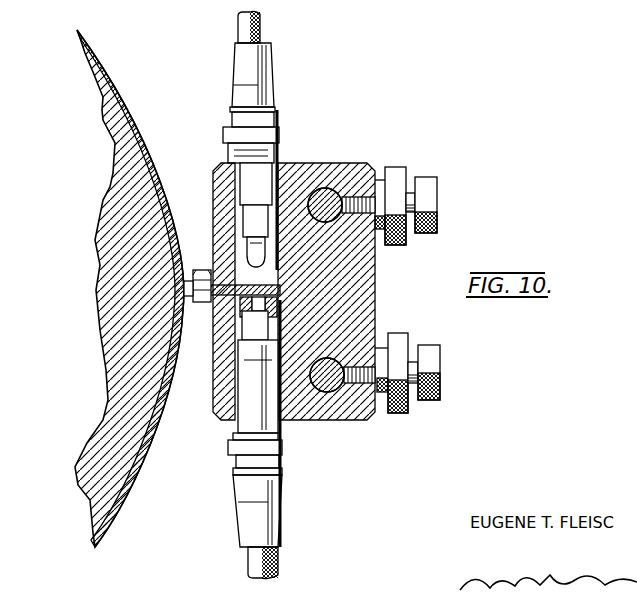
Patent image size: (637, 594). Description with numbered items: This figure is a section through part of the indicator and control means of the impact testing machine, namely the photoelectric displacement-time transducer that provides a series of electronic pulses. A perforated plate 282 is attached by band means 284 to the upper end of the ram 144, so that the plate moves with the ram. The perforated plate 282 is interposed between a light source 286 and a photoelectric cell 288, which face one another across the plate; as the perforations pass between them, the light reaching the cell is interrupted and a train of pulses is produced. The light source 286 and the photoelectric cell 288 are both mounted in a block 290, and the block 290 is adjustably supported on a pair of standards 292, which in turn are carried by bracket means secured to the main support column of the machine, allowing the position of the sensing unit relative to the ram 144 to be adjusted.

The ram 144 is at (105, 62).
The band means 284 is at (128, 82).
The light source 286 is at (284, 140).
The photoelectric cell 288 is at (280, 427).
The block 290 is at (360, 168).
The standards 292 is at (323, 193).
The perforated plate 282 is at (233, 285).